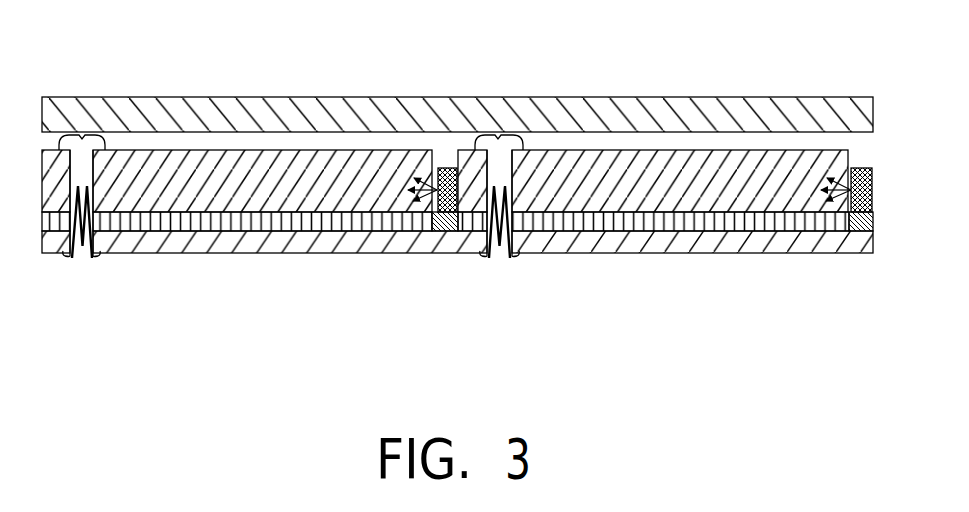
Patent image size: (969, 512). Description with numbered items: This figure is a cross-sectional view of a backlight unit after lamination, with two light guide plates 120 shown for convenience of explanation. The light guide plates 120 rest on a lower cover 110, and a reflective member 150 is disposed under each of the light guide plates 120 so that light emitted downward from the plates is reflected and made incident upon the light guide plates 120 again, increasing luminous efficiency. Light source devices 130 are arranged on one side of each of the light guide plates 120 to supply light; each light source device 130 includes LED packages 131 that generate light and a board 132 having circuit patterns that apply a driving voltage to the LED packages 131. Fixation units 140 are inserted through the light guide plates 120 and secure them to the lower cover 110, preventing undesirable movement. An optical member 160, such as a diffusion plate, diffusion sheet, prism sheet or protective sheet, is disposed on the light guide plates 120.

The lower cover 110 is at (345, 238).
The light guide plates 120 is at (152, 197).
The light source devices 130 is at (813, 274).
The LED packages 131 is at (832, 204).
The board 132 is at (858, 222).
The fixation units 140 is at (82, 138).
The reflective member 150 is at (237, 222).
The optical member 160 is at (460, 108).